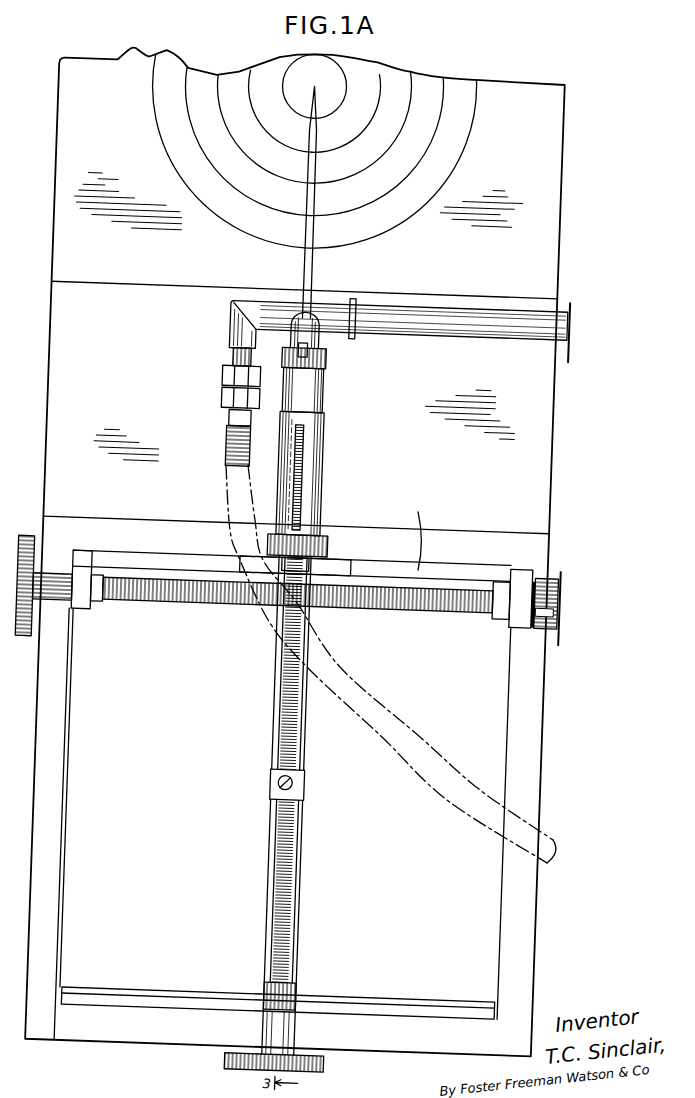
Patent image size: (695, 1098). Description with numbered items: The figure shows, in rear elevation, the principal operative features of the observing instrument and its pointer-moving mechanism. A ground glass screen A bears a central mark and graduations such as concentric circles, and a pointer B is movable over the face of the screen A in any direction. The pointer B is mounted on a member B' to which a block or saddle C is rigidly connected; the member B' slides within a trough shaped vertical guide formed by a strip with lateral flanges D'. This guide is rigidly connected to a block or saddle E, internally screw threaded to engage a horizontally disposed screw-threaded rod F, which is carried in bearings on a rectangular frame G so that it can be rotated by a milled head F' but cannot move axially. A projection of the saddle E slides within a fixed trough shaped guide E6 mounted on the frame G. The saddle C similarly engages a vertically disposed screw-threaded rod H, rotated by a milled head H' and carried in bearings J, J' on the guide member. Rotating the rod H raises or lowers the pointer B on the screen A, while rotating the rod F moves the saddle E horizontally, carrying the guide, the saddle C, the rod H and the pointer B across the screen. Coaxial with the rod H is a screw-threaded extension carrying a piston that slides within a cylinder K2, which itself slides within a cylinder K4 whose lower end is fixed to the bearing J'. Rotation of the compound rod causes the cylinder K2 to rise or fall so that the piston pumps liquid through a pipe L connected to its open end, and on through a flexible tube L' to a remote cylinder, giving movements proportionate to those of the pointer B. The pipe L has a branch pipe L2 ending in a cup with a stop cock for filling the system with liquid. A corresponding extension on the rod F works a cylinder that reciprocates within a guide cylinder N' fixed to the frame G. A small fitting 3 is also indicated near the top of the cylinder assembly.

The screen A is at (538, 129).
The pointer B is at (312, 151).
The pipe L is at (291, 361).
The branch pipe L2 is at (554, 313).
The flexible tube L' is at (390, 663).
The small fitting at cap 3 is at (302, 342).
The cylinder K2 is at (319, 386).
The cylinder K4 is at (319, 451).
The member B' is at (331, 479).
The bearing J' is at (307, 530).
The block or saddle E is at (343, 578).
The trough shaped guide E6 is at (419, 530).
The rectangular frame G is at (62, 711).
The screw-threaded rod F is at (282, 604).
The milled head F' is at (22, 602).
The guide cylinder N' is at (568, 608).
The screw-threaded rod H is at (263, 804).
The lateral flanges D' is at (258, 768).
The block or saddle C is at (310, 780).
The bearing J is at (290, 983).
The milled head H' is at (294, 1069).